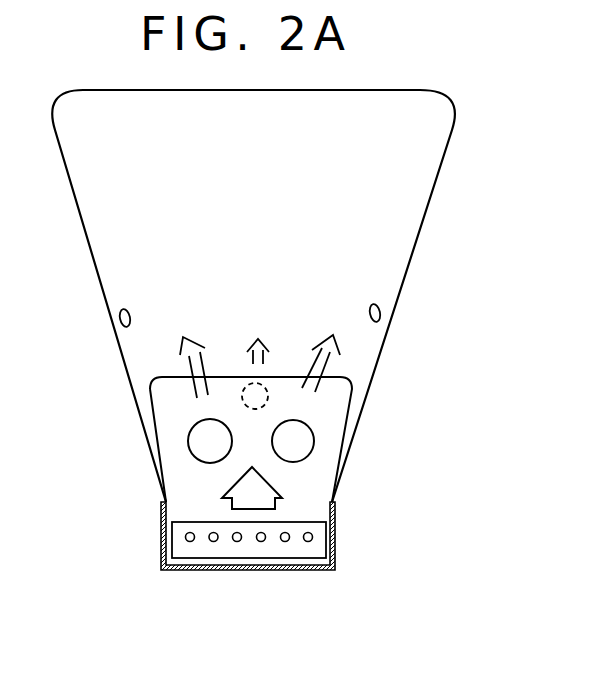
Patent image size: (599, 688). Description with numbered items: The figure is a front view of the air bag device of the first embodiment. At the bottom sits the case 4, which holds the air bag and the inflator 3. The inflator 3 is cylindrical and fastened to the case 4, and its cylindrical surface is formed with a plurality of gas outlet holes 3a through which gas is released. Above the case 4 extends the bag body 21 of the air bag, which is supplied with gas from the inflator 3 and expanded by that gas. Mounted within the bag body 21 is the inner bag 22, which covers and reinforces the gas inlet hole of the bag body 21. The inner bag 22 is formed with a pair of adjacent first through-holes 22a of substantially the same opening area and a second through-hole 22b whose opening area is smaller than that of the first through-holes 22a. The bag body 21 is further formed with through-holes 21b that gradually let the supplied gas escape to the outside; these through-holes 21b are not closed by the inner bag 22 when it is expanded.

The bag body 21 is at (407, 219).
The through-holes 21b is at (381, 308).
The inner bag 22 is at (330, 422).
The first through-holes 22a is at (203, 443).
The second through-hole 22b is at (253, 397).
The inflator 3 is at (272, 550).
The gas outlet holes 3a is at (237, 538).
The case 4 is at (336, 552).